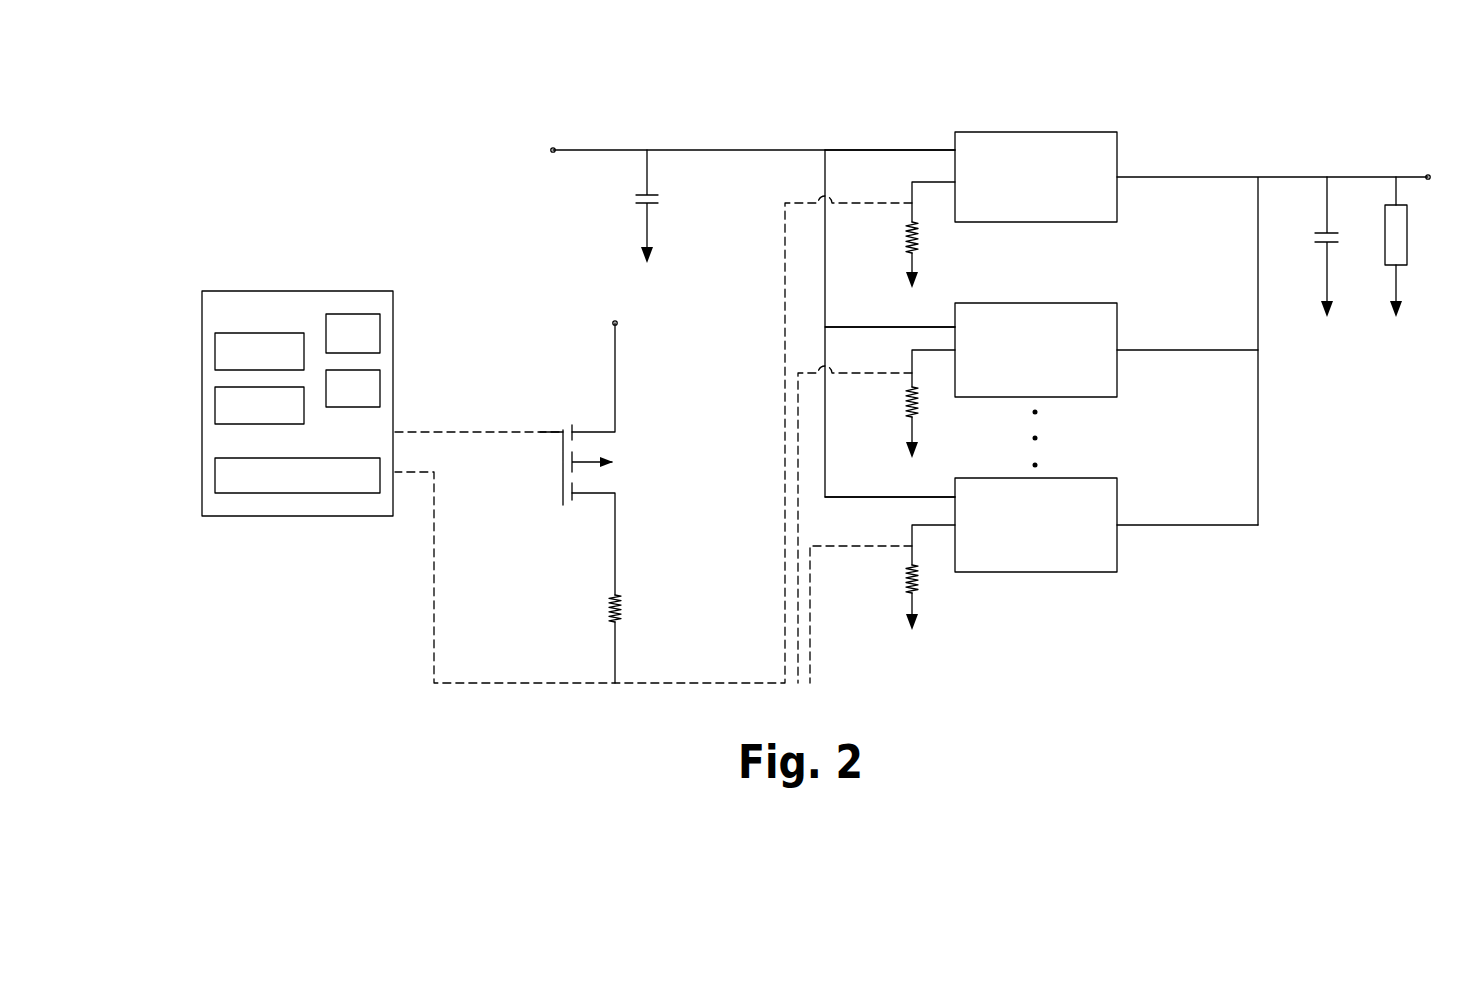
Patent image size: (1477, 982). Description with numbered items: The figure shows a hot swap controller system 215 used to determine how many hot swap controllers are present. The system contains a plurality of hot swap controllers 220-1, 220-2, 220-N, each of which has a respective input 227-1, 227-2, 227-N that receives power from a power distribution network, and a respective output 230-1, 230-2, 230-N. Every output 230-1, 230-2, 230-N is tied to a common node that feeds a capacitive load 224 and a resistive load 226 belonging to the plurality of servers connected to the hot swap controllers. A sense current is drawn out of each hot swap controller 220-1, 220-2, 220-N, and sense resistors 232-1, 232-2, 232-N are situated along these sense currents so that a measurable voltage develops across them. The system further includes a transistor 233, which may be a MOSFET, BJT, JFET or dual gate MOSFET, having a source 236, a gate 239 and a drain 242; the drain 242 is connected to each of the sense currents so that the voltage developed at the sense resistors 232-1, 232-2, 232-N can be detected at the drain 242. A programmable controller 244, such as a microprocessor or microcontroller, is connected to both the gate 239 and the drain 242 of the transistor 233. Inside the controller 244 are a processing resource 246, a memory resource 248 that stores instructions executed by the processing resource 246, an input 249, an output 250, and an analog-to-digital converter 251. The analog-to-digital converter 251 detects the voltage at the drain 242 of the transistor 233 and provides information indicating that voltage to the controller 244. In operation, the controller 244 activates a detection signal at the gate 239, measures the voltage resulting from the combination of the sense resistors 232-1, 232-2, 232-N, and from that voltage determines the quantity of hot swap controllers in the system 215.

The hot swap controller system 215 is at (415, 139).
The programmable controller 244 is at (263, 291).
The memory resource 248 is at (214, 344).
The processing resource 246 is at (235, 426).
The analog-to-digital converter 251 is at (296, 495).
The input 249 is at (380, 331).
The output 250 is at (380, 386).
The transistor 233 is at (606, 502).
The source 236 is at (650, 379).
The gate 239 is at (535, 466).
The drain 242 is at (588, 588).
The input 227-1 is at (866, 150).
The input 227-2 is at (866, 327).
The input 227-N is at (866, 497).
The hot swap controller 220-1 is at (1047, 170).
The hot swap controller 220-2 is at (1047, 345).
The hot swap controller 220-N is at (1047, 518).
The sense resistor 232-1 is at (918, 238).
The sense resistor 232-2 is at (917, 408).
The sense resistor 232-N is at (918, 580).
The output 230-1 is at (1220, 177).
The output 230-2 is at (1220, 350).
The output 230-N is at (1220, 525).
The capacitive load 224 is at (1336, 230).
The resistive load 226 is at (1408, 233).